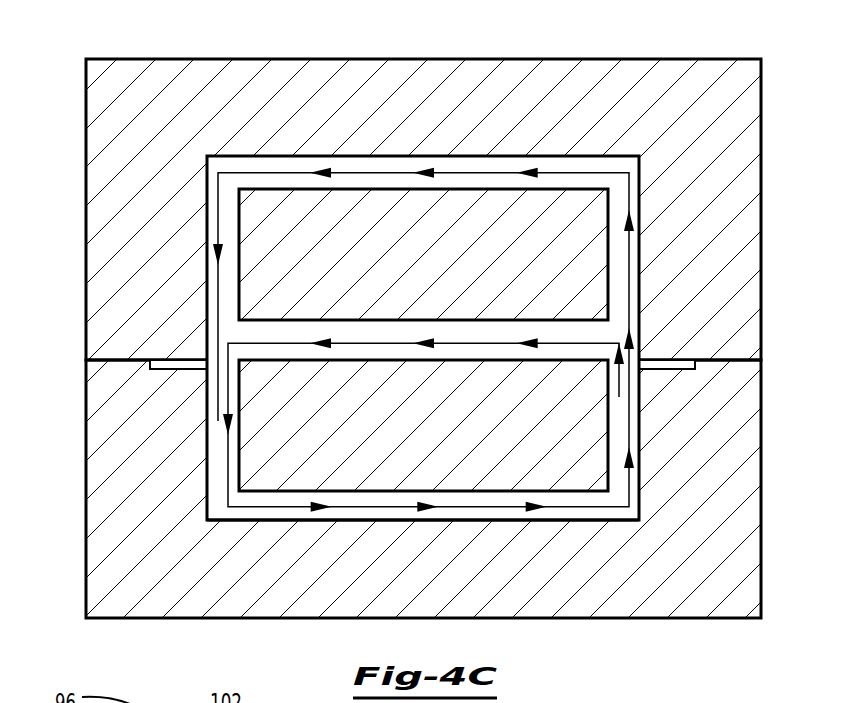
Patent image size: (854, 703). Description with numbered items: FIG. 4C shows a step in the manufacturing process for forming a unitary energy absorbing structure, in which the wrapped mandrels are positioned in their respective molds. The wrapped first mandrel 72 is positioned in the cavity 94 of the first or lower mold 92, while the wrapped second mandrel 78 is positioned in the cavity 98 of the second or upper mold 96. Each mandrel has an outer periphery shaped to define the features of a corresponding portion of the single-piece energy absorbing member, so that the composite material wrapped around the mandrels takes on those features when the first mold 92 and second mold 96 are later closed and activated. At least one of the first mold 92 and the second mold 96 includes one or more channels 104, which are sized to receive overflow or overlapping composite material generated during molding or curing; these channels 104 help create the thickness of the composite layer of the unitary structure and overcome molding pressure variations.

The second mold 96 is at (131, 52).
The first mold 92 is at (710, 628).
The cavity of the second mold 98 is at (592, 156).
The second mandrel 78 is at (350, 205).
The first mandrel 72 is at (549, 467).
The cavity of the first mold 94 is at (274, 520).
The channels 104 is at (180, 363).